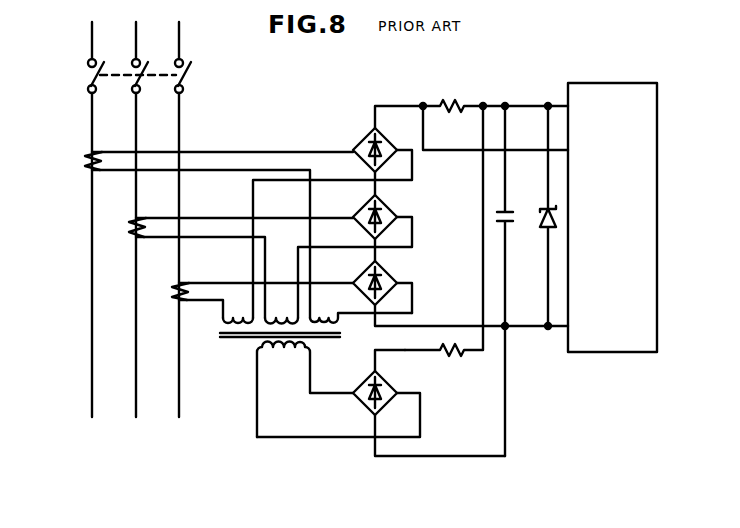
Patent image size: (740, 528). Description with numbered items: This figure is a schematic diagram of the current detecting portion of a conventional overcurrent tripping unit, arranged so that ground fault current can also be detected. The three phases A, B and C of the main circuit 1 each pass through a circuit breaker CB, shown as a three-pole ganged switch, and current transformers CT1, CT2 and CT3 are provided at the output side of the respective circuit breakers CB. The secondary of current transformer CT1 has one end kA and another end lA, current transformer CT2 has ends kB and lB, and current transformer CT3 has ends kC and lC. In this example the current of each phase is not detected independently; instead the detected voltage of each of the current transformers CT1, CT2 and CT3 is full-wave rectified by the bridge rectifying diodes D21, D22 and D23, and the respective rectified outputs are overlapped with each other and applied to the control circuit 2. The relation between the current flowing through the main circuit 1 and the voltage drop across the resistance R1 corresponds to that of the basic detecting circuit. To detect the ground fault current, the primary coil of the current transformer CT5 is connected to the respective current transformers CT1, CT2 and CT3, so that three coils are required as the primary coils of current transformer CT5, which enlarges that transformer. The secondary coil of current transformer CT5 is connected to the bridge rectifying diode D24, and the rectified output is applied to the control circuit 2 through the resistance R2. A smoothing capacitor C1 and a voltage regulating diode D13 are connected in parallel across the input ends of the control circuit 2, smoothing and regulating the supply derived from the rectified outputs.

The main circuit 1 is at (190, 32).
The control circuit 2 is at (604, 83).
The circuit breaker CB is at (190, 78).
The current transformer CT1 is at (88, 170).
The current transformer CT2 is at (132, 238).
The current transformer CT3 is at (175, 300).
The current transformer for detecting the ground fault current CT5 is at (233, 340).
The bridge rectifying diode D21 is at (384, 138).
The bridge rectifying diode D22 is at (395, 205).
The bridge rectifying diode D23 is at (394, 274).
The bridge rectifying diode D24 is at (392, 379).
The voltage regulating diode D13 is at (538, 209).
The resistance R1 is at (456, 100).
The resistance R2 is at (455, 354).
The smoothing capacitor C1 is at (512, 222).
The phase A line A is at (94, 208).
The phase B line B is at (138, 208).
The phase C line C is at (181, 208).
The one end of the current transformer CT1 kA is at (222, 141).
The other end of the current transformer CT1 lA is at (201, 244).
The one end of the current transformer CT2 kB is at (244, 208).
The other end of the current transformer CT2 lB is at (200, 277).
The one end of the current transformer CT3 kC is at (266, 273).
The other end of the current transformer CT3 lC is at (201, 310).